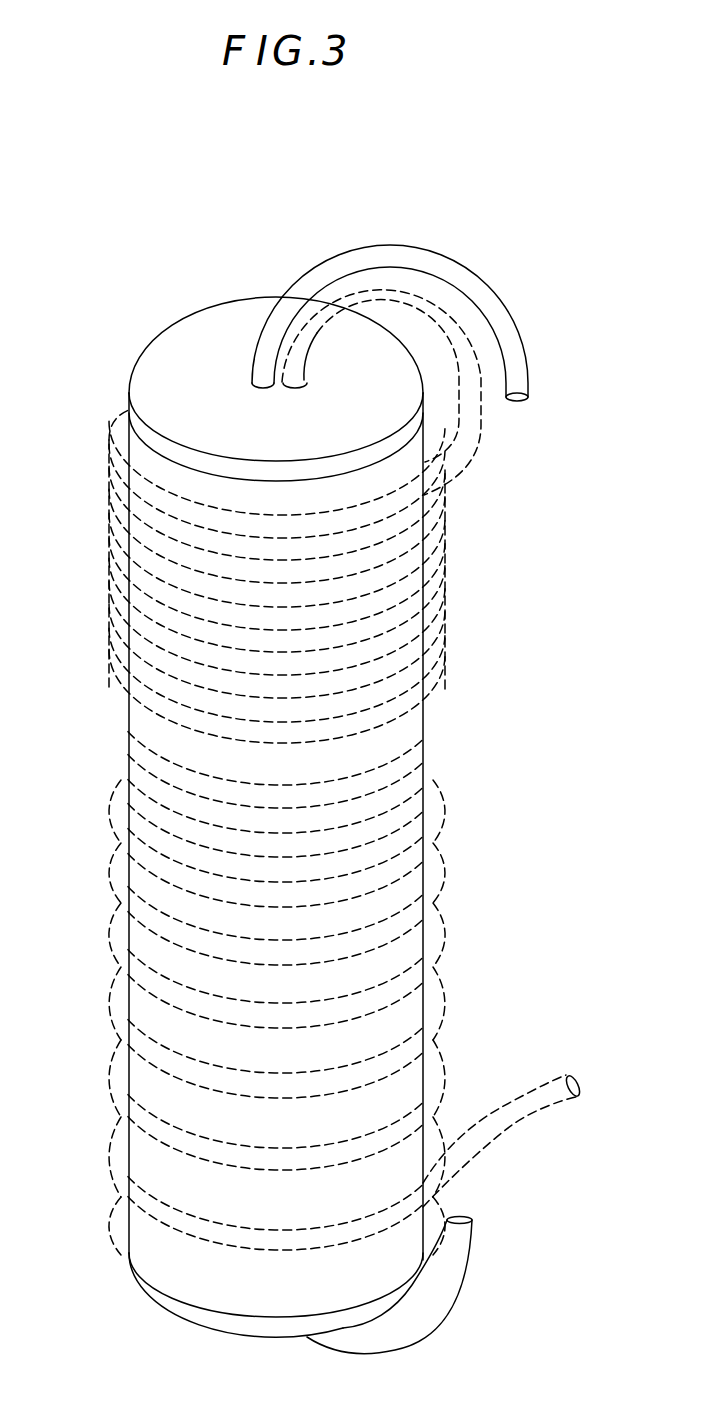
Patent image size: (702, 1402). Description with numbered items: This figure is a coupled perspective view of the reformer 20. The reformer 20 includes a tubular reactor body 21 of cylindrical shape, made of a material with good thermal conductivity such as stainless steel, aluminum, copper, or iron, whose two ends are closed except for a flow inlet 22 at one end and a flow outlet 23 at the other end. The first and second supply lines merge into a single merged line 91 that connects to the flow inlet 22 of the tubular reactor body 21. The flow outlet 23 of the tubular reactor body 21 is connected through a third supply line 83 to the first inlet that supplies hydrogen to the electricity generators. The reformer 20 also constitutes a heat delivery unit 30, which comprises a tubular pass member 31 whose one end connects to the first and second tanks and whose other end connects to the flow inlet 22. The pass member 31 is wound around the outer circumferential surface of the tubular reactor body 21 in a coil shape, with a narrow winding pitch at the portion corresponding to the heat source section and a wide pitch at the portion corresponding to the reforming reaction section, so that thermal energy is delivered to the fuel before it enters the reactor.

The reformer 20 is at (242, 203).
The tubular reactor body 21 is at (393, 1013).
The flow inlet 22 is at (167, 355).
The flow outlet 23 is at (160, 1293).
The heat delivery unit 30 is at (472, 628).
The pass member 31 is at (440, 573).
The third supply line 83 is at (458, 1282).
The merged line 91 is at (478, 292).